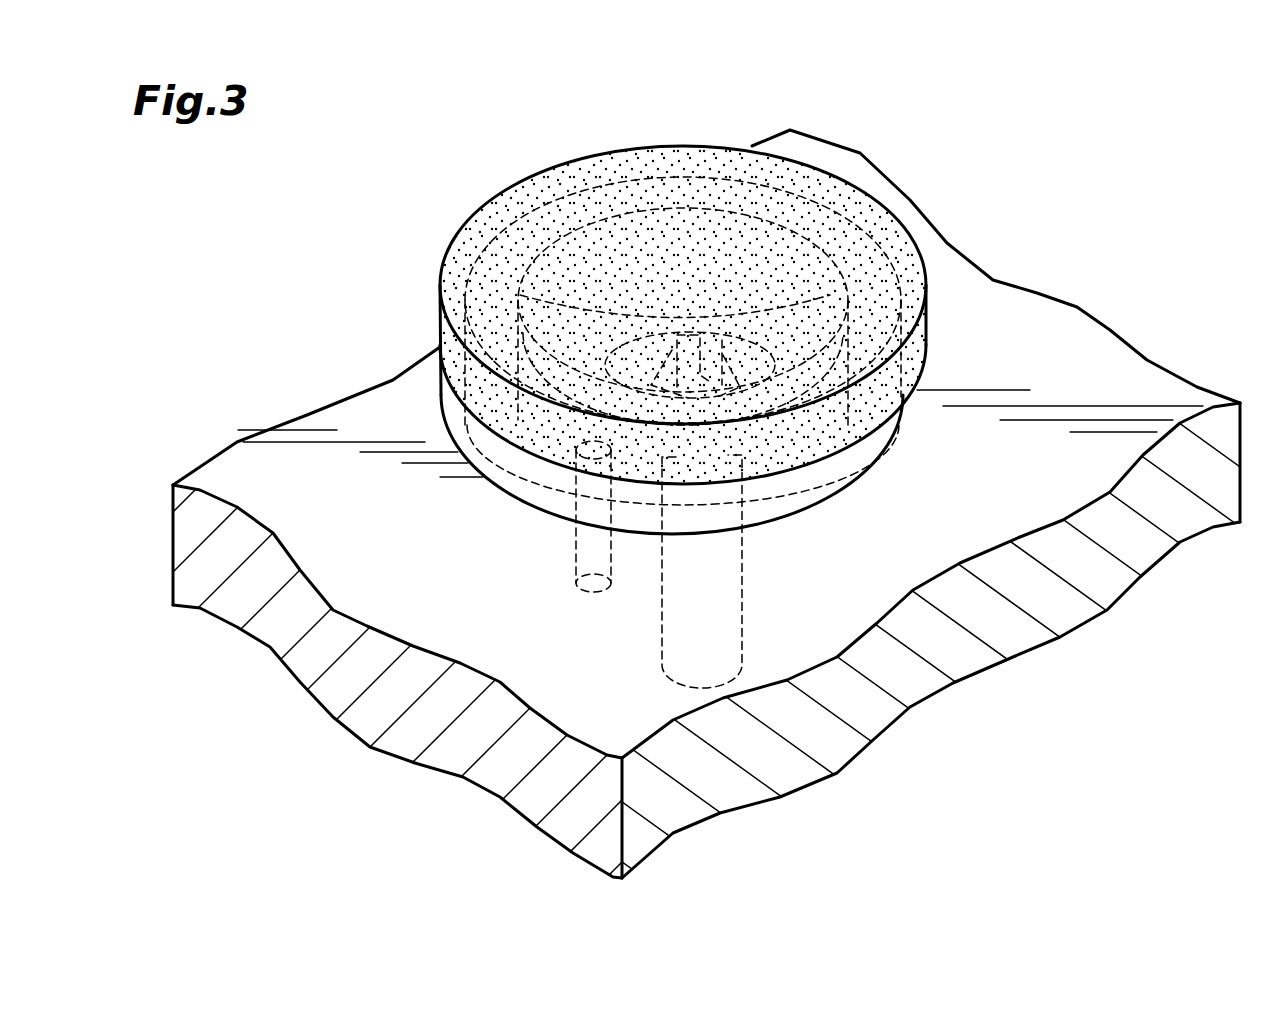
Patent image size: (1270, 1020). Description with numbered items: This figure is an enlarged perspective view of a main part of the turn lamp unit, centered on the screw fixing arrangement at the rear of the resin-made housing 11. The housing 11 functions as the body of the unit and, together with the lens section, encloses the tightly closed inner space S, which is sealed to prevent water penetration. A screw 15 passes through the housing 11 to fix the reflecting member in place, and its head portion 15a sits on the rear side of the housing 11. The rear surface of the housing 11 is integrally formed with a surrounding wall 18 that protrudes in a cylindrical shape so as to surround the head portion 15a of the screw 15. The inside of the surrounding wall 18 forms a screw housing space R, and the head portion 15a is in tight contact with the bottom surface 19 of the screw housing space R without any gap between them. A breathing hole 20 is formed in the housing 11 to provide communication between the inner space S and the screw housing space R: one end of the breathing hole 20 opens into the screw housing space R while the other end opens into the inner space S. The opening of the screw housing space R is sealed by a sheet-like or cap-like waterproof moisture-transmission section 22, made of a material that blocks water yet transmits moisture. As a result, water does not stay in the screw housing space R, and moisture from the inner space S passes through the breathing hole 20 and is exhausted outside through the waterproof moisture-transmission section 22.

The housing 11 is at (1093, 332).
The screw 15 is at (742, 567).
The head portion 15a is at (773, 335).
The surrounding wall 18 is at (810, 212).
The bottom surface 19 is at (850, 423).
The breathing hole 20 is at (578, 543).
The waterproof moisture-transmission section 22 is at (925, 305).
The screw housing space R is at (640, 253).
The inner space S is at (992, 747).